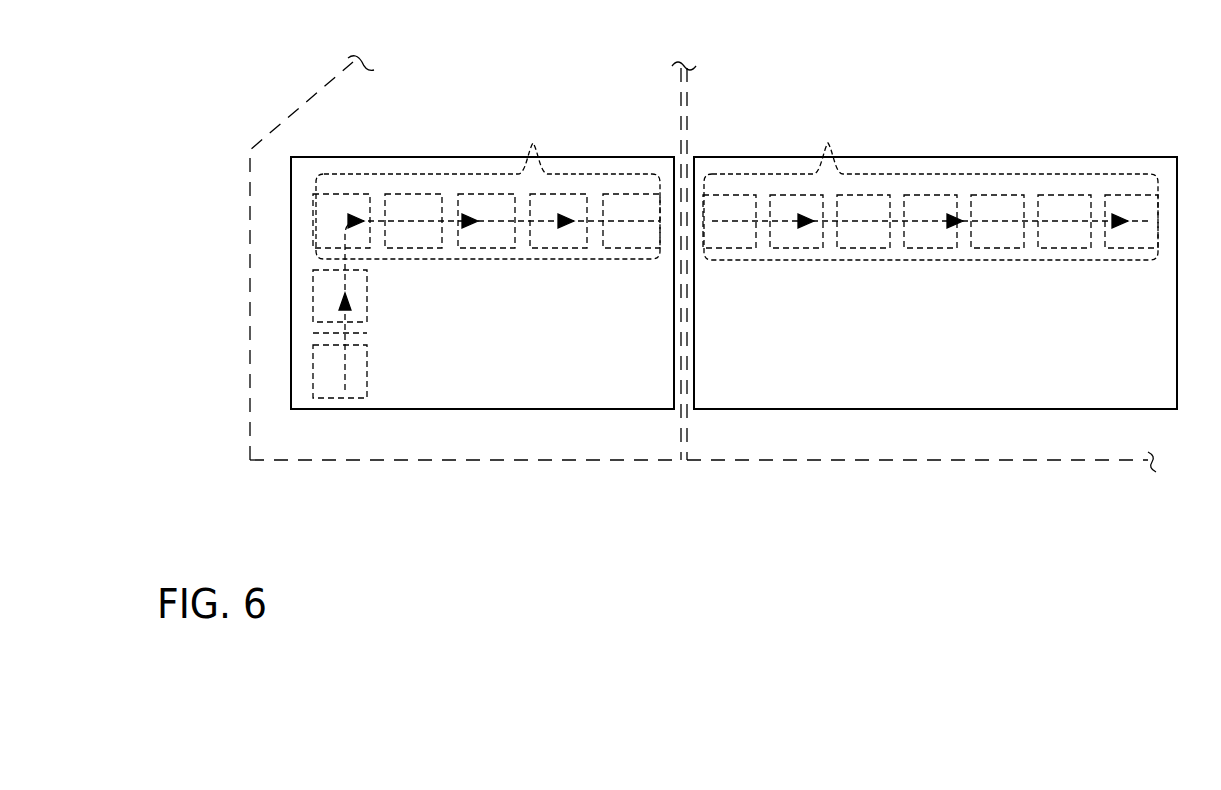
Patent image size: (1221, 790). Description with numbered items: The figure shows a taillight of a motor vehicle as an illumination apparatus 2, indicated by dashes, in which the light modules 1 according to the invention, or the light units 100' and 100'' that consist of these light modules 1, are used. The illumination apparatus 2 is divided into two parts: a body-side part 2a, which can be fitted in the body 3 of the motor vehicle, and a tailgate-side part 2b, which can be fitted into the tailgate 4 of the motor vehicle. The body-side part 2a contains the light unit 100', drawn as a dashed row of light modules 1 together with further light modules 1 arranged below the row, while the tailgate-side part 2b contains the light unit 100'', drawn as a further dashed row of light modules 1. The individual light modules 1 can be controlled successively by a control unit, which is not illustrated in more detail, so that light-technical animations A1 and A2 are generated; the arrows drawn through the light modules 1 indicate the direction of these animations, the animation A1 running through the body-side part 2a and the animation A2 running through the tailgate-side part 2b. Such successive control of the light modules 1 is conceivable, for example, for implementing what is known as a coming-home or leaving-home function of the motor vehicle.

The light module 1 is at (339, 194).
The illumination apparatus 2 is at (707, 90).
The body-side part 2a is at (430, 157).
The tailgate-side part 2b is at (971, 158).
The body 3 is at (311, 444).
The tailgate 4 is at (792, 434).
The light unit 100' is at (488, 183).
The light unit 100'' is at (931, 184).
The light-technical animation A1 is at (499, 378).
The light-technical animation A2 is at (931, 377).